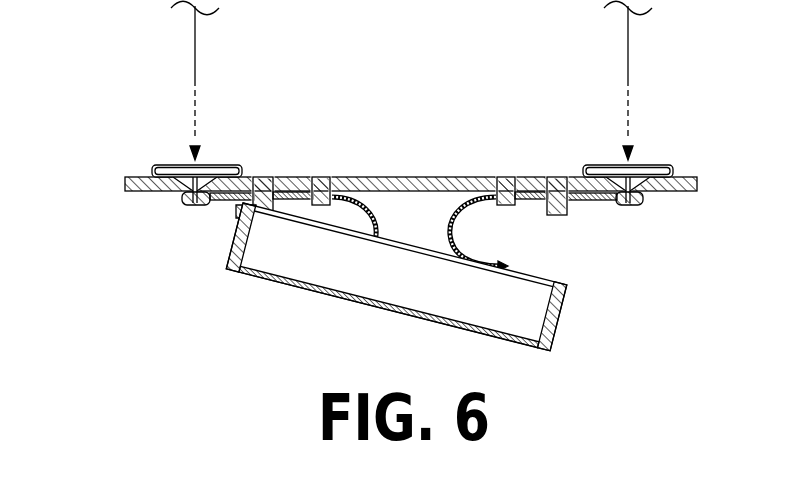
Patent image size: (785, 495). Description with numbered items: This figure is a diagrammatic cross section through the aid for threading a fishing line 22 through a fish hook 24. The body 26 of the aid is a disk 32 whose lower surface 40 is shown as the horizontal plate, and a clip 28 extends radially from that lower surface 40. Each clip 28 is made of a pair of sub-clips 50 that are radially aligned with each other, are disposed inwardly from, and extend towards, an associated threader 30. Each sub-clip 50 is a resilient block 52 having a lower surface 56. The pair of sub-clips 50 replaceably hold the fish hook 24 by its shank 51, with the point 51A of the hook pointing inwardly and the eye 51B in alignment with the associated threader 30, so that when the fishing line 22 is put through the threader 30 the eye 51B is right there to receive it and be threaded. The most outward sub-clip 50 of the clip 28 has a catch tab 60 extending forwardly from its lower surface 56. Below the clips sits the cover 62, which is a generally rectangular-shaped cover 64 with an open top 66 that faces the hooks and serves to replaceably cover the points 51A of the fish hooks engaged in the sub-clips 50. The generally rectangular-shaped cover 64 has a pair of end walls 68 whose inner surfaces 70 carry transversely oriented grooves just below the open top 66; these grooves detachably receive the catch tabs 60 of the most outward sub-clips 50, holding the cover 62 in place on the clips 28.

The fishing line 22 is at (618, 35).
The fish hook 24 is at (423, 338).
The body 26 is at (138, 111).
The clip 28 is at (588, 215).
The threader 30 is at (160, 158).
The disk 32 is at (171, 131).
The lower surface 40 is at (153, 193).
The sub-clip 50 is at (552, 189).
The shank 51 is at (298, 222).
The point 51A is at (347, 268).
The eye 51B is at (640, 206).
The block 52 is at (592, 235).
The lower surface 56 is at (498, 204).
The catch tab 60 is at (389, 270).
The cover 62 is at (444, 342).
The generally rectangular-shaped cover 64 is at (561, 364).
The open top 66 is at (364, 284).
The end wall 68 is at (423, 305).
The inner surface 70 is at (240, 240).